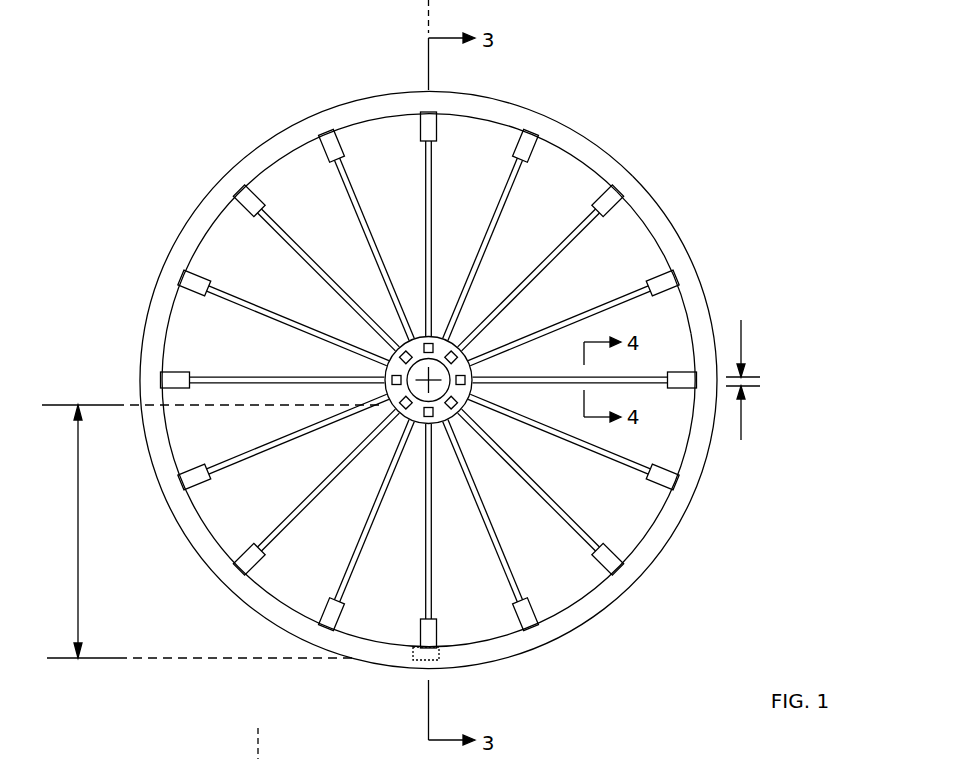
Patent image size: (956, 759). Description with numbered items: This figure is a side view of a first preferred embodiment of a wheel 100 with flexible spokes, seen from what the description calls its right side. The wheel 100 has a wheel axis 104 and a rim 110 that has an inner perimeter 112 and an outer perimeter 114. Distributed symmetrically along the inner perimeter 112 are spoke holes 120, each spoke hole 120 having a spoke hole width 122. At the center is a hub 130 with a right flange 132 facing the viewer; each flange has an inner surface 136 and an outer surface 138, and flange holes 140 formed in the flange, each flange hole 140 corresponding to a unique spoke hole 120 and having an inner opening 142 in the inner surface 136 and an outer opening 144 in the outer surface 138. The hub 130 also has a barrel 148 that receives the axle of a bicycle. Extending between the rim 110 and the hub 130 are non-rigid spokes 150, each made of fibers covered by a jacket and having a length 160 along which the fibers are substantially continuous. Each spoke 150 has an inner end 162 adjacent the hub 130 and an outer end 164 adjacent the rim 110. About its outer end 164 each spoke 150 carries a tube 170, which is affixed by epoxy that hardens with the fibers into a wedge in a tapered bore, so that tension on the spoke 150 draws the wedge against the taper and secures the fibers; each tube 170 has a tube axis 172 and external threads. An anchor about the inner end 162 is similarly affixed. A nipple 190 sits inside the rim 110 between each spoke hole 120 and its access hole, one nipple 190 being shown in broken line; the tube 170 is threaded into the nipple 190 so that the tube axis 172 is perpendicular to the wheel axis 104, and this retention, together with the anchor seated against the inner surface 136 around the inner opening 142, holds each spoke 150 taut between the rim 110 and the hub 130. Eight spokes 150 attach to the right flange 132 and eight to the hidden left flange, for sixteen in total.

The wheel 100 is at (732, 146).
The wheel axis 104 is at (523, 250).
The rim 110 is at (207, 210).
The inner perimeter 112 is at (612, 255).
The outer perimeter 114 is at (693, 282).
The spoke hole 120 is at (490, 660).
The spoke hole width 122 is at (742, 320).
The hub 130 is at (377, 280).
The right flange 132 is at (335, 305).
The inner surface 136 is at (420, 283).
The outer surface 138 is at (450, 418).
The flange hole 140 is at (385, 373).
The inner opening 142 is at (472, 402).
The outer opening 144 is at (457, 250).
The barrel 148 is at (550, 250).
The spoke 150 is at (367, 512).
The length 160 is at (78, 598).
The inner end 162 is at (472, 396).
The outer end 164 is at (637, 470).
The tube 170 is at (610, 560).
The tube axis 172 is at (423, 4).
The nipple 190 is at (433, 653).